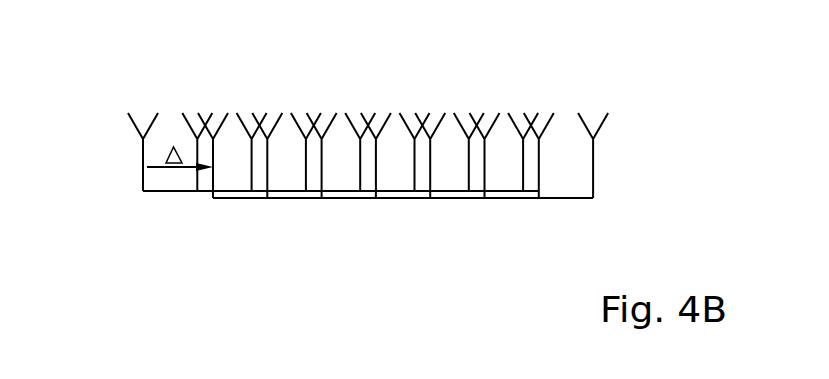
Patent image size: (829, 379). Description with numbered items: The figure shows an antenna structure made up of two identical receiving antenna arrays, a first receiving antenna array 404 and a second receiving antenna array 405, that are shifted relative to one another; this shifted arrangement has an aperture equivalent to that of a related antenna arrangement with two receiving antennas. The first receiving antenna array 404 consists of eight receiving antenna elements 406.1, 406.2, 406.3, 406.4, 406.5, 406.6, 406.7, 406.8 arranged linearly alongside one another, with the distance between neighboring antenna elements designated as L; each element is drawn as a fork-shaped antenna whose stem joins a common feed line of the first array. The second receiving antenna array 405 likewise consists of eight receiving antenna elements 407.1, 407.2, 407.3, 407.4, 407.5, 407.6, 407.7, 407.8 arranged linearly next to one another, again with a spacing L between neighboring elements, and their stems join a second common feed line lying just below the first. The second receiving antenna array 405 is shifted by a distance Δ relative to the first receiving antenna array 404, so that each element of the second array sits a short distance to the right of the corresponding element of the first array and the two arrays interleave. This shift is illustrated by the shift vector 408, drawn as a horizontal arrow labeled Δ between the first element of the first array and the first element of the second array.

The first receiving antenna array 404 is at (121, 161).
The second receiving antenna array 405 is at (618, 192).
The receiving antenna element 406.1 is at (131, 119).
The receiving antenna element 406.2 is at (186, 119).
The receiving antenna element 406.3 is at (240, 119).
The receiving antenna element 406.4 is at (294, 119).
The receiving antenna element 406.5 is at (349, 119).
The receiving antenna element 406.6 is at (403, 119).
The receiving antenna element 406.7 is at (458, 119).
The receiving antenna element 406.8 is at (513, 119).
The receiving antenna element 407.1 is at (212, 178).
The receiving antenna element 407.2 is at (266, 178).
The receiving antenna element 407.3 is at (320, 178).
The receiving antenna element 407.4 is at (374, 178).
The receiving antenna element 407.5 is at (429, 178).
The receiving antenna element 407.6 is at (483, 178).
The receiving antenna element 407.7 is at (537, 178).
The receiving antenna element 407.8 is at (592, 184).
The shift vector 408 is at (160, 168).